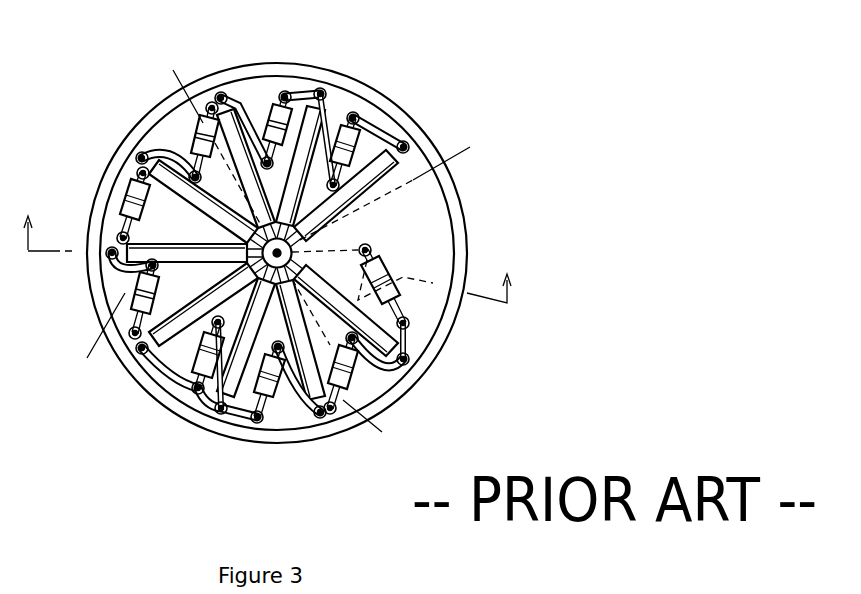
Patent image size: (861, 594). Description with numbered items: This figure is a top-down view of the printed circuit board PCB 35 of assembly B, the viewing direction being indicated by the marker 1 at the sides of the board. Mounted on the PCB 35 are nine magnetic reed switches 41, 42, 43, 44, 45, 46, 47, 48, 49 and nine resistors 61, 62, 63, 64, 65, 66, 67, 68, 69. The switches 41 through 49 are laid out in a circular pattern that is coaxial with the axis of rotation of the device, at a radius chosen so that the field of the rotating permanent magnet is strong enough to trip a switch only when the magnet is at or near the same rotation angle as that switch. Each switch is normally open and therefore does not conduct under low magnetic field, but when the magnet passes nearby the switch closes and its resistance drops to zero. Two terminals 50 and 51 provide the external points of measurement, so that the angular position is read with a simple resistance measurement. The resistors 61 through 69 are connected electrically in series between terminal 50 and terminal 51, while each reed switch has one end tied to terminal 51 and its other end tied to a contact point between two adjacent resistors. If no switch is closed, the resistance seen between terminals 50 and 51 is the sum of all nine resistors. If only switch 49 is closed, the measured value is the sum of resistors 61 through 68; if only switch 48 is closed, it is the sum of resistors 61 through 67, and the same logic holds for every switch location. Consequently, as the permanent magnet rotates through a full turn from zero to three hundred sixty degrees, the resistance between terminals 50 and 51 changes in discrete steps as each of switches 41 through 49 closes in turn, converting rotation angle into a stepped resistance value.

The section line 1 is at (266, 251).
The PCB 35 is at (440, 246).
The magnetic reed switch 41 is at (318, 280).
The magnetic reed switch 42 is at (289, 415).
The magnetic reed switch 43 is at (224, 418).
The magnetic reed switch 44 is at (186, 312).
The magnetic reed switch 45 is at (201, 250).
The magnetic reed switch 46 is at (186, 189).
The magnetic reed switch 47 is at (252, 179).
The magnetic reed switch 48 is at (316, 92).
The magnetic reed switch 49 is at (365, 194).
The terminal 50 is at (297, 252).
The terminal 51 is at (367, 244).
The resistor 61 is at (398, 298).
The resistor 62 is at (350, 395).
The resistor 63 is at (262, 428).
The resistor 64 is at (188, 392).
The resistor 65 is at (118, 304).
The resistor 66 is at (125, 195).
The resistor 67 is at (197, 118).
The resistor 68 is at (270, 103).
The resistor 69 is at (348, 147).